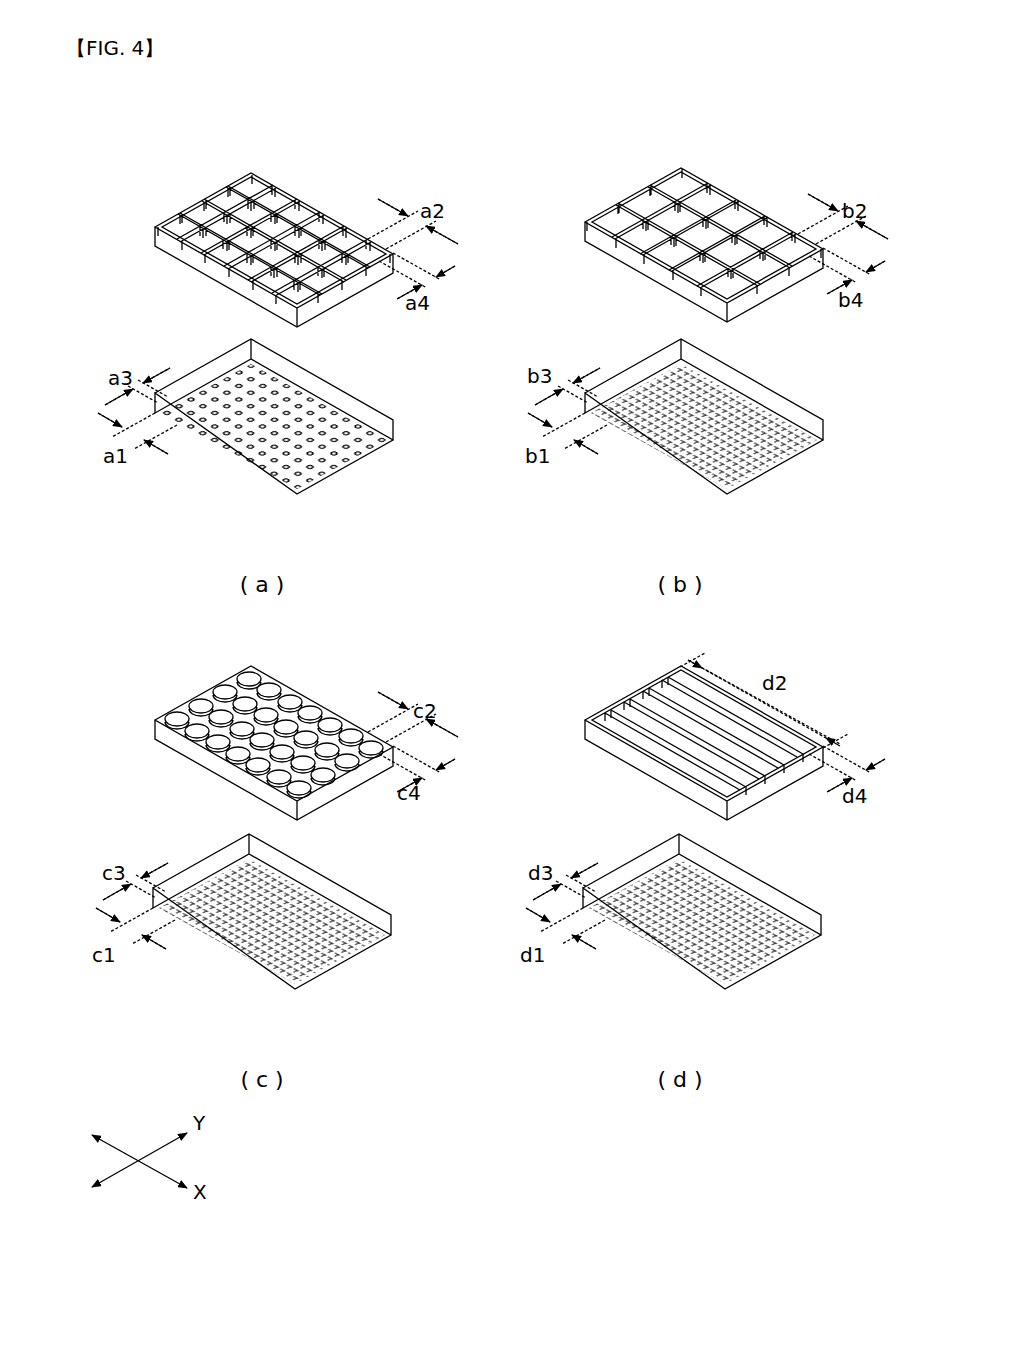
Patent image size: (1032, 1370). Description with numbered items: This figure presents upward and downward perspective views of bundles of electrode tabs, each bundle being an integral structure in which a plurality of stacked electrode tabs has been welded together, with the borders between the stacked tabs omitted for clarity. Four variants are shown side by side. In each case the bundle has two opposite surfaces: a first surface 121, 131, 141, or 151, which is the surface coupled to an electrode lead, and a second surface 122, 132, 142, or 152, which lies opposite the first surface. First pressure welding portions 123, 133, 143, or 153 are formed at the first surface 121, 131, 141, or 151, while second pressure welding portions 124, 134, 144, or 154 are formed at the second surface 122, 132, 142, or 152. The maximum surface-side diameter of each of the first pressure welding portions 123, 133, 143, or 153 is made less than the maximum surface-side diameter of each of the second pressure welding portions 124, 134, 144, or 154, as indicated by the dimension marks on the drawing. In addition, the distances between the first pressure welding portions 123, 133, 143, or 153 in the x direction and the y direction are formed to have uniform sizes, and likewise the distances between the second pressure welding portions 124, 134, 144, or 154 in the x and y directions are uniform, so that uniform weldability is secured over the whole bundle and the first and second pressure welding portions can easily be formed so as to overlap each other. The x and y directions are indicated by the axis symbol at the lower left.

The first surface 121 is at (281, 497).
The second surface 122 is at (278, 171).
The first pressure welding portions 123 is at (368, 455).
The second pressure welding portions 124 is at (235, 198).
The first surface 131 is at (698, 497).
The second surface 132 is at (708, 166).
The first pressure welding portions 133 is at (783, 458).
The second pressure welding portions 134 is at (640, 195).
The first surface 141 is at (275, 993).
The second surface 142 is at (302, 683).
The first pressure welding portions 143 is at (372, 953).
The second pressure welding portions 144 is at (210, 694).
The first surface 151 is at (700, 993).
The second surface 152 is at (725, 683).
The first pressure welding portions 153 is at (802, 953).
The second pressure welding portions 154 is at (635, 697).